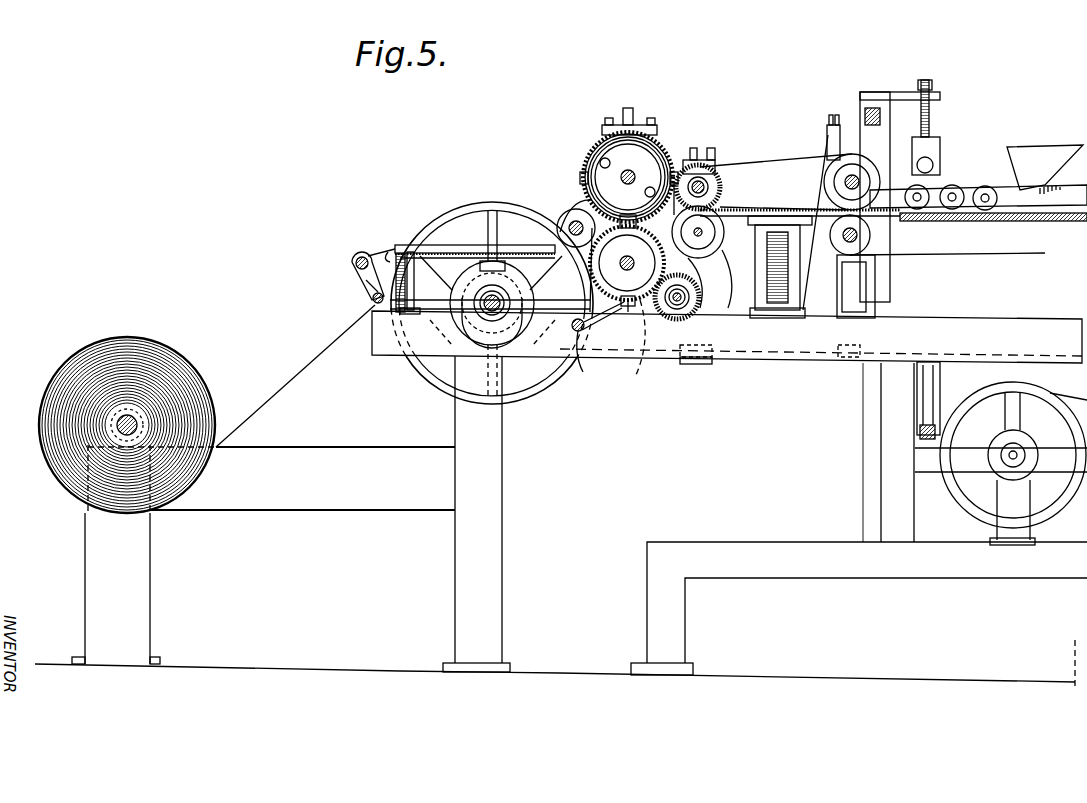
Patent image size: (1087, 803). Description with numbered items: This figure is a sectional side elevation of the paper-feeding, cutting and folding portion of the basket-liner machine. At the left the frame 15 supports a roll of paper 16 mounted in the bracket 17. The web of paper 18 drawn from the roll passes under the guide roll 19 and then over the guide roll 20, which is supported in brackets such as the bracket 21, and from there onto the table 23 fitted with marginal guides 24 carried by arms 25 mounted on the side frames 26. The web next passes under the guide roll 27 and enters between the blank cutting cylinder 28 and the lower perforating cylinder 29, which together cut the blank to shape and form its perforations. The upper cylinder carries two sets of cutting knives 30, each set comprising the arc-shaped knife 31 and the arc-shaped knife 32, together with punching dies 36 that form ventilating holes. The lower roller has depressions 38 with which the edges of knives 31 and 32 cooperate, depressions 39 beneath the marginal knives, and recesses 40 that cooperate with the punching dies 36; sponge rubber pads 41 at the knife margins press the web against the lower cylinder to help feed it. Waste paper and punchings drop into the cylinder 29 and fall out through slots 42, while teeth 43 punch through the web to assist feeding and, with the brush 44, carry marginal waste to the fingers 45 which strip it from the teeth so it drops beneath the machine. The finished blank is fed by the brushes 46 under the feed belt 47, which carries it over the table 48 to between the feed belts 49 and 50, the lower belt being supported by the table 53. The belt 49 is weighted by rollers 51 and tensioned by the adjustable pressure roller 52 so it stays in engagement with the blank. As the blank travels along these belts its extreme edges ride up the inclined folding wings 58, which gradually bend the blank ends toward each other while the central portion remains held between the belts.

The frame 15 is at (270, 503).
The roll of paper 16 is at (60, 470).
The bracket 17 is at (112, 408).
The web of paper 18 is at (296, 388).
The guide roll 19 is at (372, 300).
The guide roll 20 is at (360, 256).
The bracket 21 is at (364, 282).
The table 23 is at (393, 249).
The marginal guides 24 is at (406, 245).
The arms 25 is at (414, 281).
The side frames 26 is at (433, 330).
The guide roll 27 is at (567, 214).
The blank cutting cylinder 28 is at (628, 177).
The perforating cylinder 29 is at (627, 263).
The cutting knives 30 is at (662, 160).
The arc-shaped knife 31 is at (658, 148).
The arc-shaped knife 32 is at (702, 165).
The punching dies 36 is at (580, 178).
The depressions 38 is at (655, 287).
The depressions 39 is at (640, 312).
The recesses 40 is at (600, 250).
The sponge rubber pads 41 is at (568, 206).
The slots 42 is at (624, 306).
The teeth 43 is at (646, 344).
The brush 44 is at (684, 316).
The fingers 45 is at (592, 358).
The brushes 46 is at (718, 168).
The feed belt 47 is at (773, 162).
The table 48 is at (734, 222).
The feed belt 49 is at (955, 185).
The feed belt 50 is at (905, 212).
The rollers 51 is at (982, 210).
The adjustable pressure roller 52 is at (935, 160).
The table 53 is at (1035, 222).
The folding wings 58 is at (1032, 150).